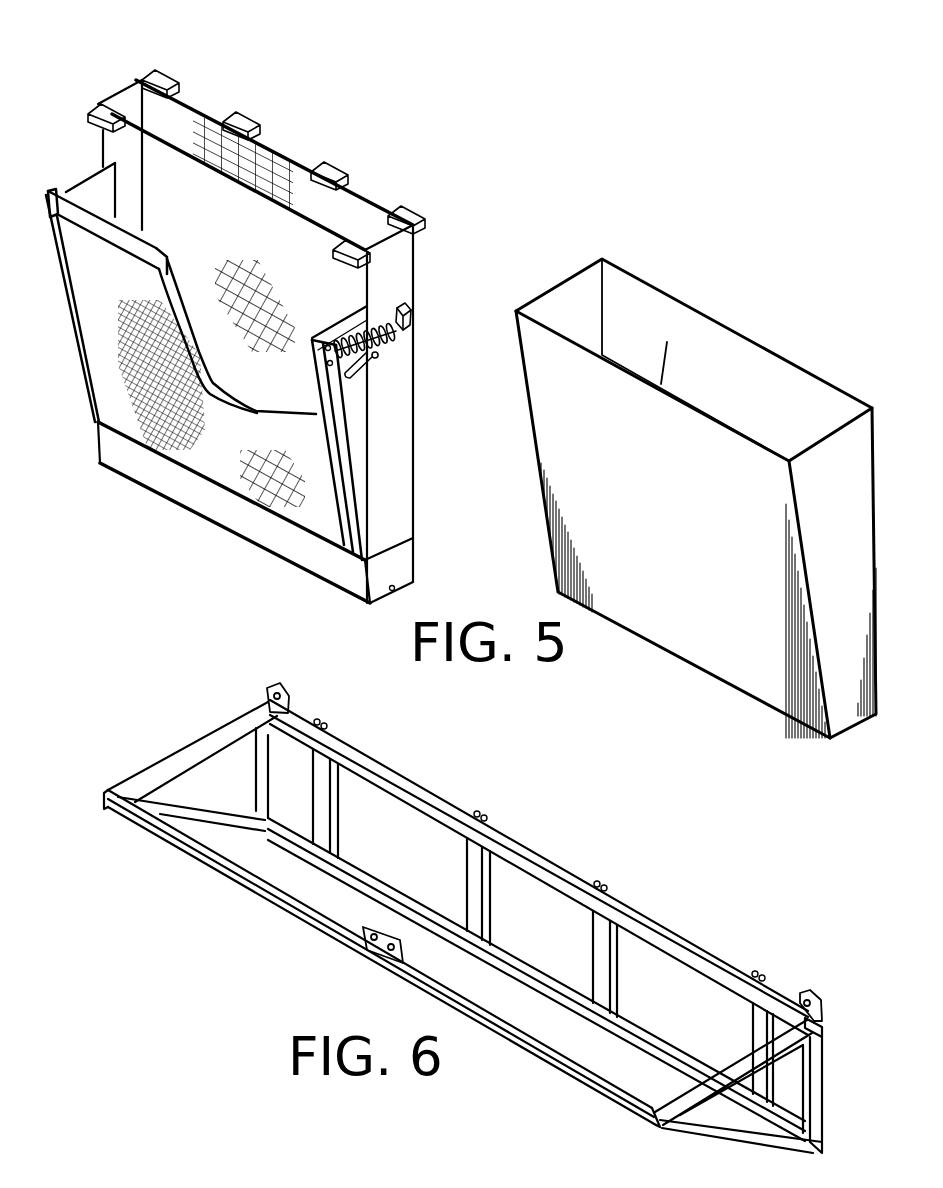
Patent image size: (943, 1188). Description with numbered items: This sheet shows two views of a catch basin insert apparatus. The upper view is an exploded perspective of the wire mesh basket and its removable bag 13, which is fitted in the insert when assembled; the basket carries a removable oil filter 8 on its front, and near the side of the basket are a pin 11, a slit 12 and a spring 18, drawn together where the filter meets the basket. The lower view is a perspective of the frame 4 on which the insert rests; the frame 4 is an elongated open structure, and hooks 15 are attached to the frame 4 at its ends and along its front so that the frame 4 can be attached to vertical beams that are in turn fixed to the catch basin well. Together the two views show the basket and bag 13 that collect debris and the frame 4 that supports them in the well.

In FIG. 6, the frame 4 is at (568, 872).
In FIG. 5, the removable oil filter 8 is at (70, 200).
In FIG. 5, the pin 11 is at (378, 357).
In FIG. 5, the slit 12 is at (358, 375).
In FIG. 5, the removable bag 13 is at (714, 334).
In FIG. 6, the hooks 15 is at (292, 695).
In FIG. 5, the spring 18 is at (385, 307).